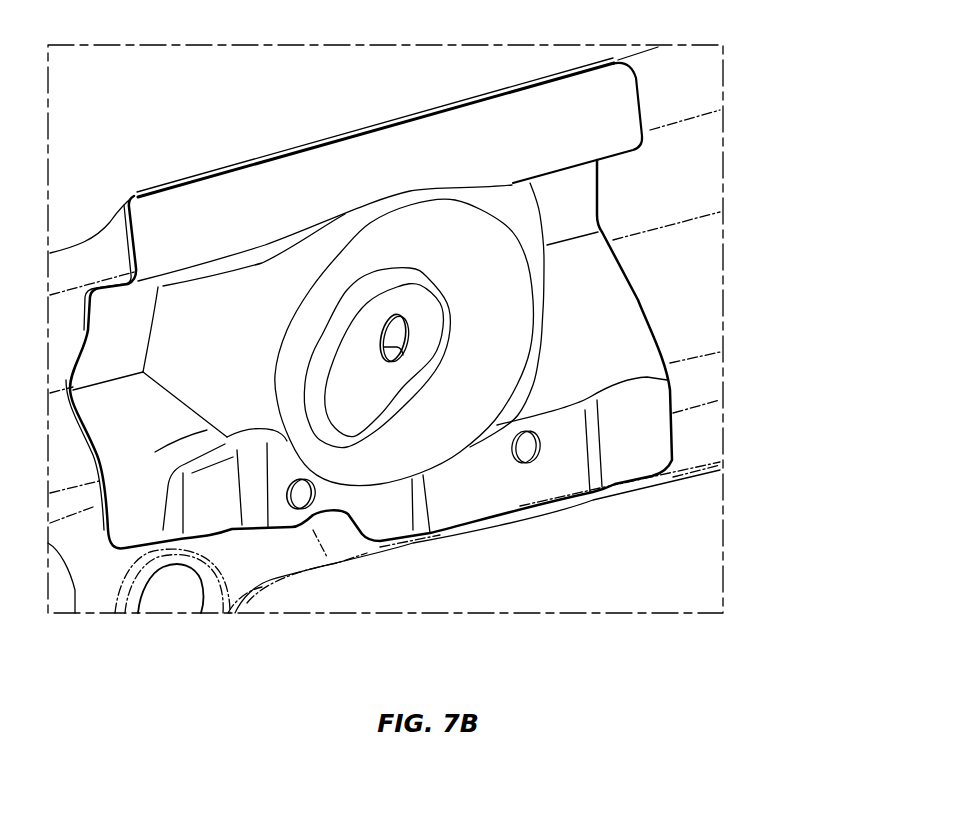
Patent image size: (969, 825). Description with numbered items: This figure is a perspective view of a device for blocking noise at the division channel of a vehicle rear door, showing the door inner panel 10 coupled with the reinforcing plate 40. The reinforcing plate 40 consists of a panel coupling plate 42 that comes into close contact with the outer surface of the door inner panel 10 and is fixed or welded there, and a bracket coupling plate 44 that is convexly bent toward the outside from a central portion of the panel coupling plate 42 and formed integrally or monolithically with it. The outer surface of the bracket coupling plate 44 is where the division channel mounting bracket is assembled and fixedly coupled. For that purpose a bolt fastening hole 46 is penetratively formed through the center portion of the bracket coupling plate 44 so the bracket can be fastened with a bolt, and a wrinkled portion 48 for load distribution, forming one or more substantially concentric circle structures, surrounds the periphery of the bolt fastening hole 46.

The door inner panel 10 is at (677, 170).
The reinforcing plate 40 is at (645, 283).
The panel coupling plate 42 is at (190, 207).
The bracket coupling plate 44 is at (407, 393).
The bolt fastening hole 46 is at (404, 362).
The wrinkled portion 48 is at (330, 352).